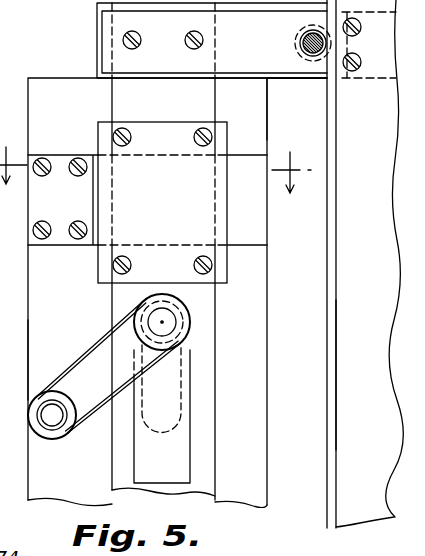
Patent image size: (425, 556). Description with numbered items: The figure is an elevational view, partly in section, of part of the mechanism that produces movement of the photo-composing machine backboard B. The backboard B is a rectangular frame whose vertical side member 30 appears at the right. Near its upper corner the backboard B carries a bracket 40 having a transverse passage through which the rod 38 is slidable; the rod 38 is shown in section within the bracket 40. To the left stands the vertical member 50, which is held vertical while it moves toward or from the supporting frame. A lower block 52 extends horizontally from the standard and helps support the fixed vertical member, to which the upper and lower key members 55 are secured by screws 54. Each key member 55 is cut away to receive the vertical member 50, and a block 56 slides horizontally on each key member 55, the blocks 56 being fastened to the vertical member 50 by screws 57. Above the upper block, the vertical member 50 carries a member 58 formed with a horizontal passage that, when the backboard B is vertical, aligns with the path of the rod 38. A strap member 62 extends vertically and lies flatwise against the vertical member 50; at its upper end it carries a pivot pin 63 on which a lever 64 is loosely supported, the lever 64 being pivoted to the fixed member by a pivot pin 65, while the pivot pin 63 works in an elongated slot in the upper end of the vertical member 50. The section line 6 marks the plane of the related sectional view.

The section line 6- 6 is at (155, 182).
The vertical side member 30 is at (334, 373).
The rod 38 is at (300, 43).
The bracket 40 is at (107, 37).
The vertical member 50 is at (125, 90).
The lower block 52 is at (133, 277).
The screws 54 is at (80, 223).
The key member 55 is at (60, 245).
The block 56 is at (98, 132).
The screws 57 is at (194, 137).
The member 58 is at (295, 82).
The strap member 62 is at (182, 453).
The pivot pin 63 is at (168, 322).
The lever 64 is at (98, 353).
The pivot pin 65 is at (56, 428).
The backboard B is at (365, 264).